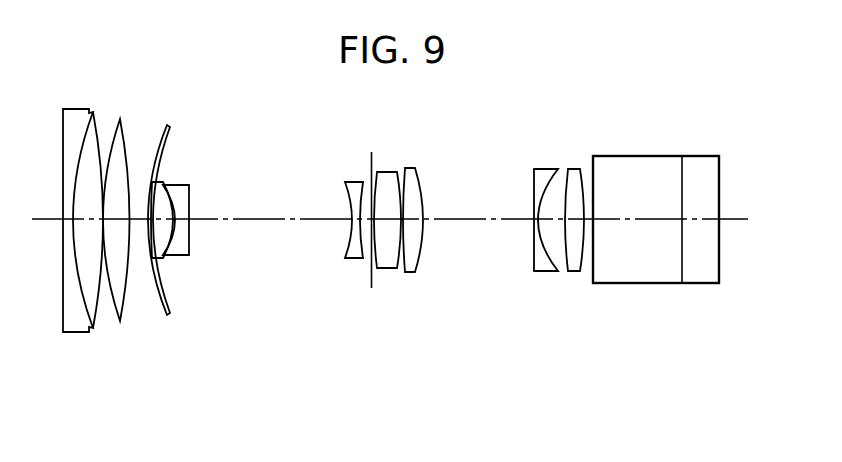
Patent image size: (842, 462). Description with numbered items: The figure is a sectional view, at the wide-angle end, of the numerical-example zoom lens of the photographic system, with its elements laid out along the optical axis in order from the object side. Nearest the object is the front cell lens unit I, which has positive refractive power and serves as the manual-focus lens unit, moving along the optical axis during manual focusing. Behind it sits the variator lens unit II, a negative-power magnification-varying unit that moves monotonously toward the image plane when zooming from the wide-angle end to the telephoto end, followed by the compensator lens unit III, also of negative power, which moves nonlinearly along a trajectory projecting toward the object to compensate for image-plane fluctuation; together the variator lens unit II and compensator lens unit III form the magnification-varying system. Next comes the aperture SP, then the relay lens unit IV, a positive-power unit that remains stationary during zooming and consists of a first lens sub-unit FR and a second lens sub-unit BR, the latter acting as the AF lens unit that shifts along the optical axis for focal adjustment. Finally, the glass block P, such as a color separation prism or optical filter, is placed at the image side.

The front cell lens unit I is at (48, 339).
The variator lens unit II is at (195, 266).
The compensator lens unit III is at (370, 273).
The relay lens unit IV is at (479, 266).
The first lens sub-unit FR is at (425, 280).
The second lens sub-unit BR is at (559, 242).
The aperture SP is at (373, 160).
The glass block P is at (656, 236).